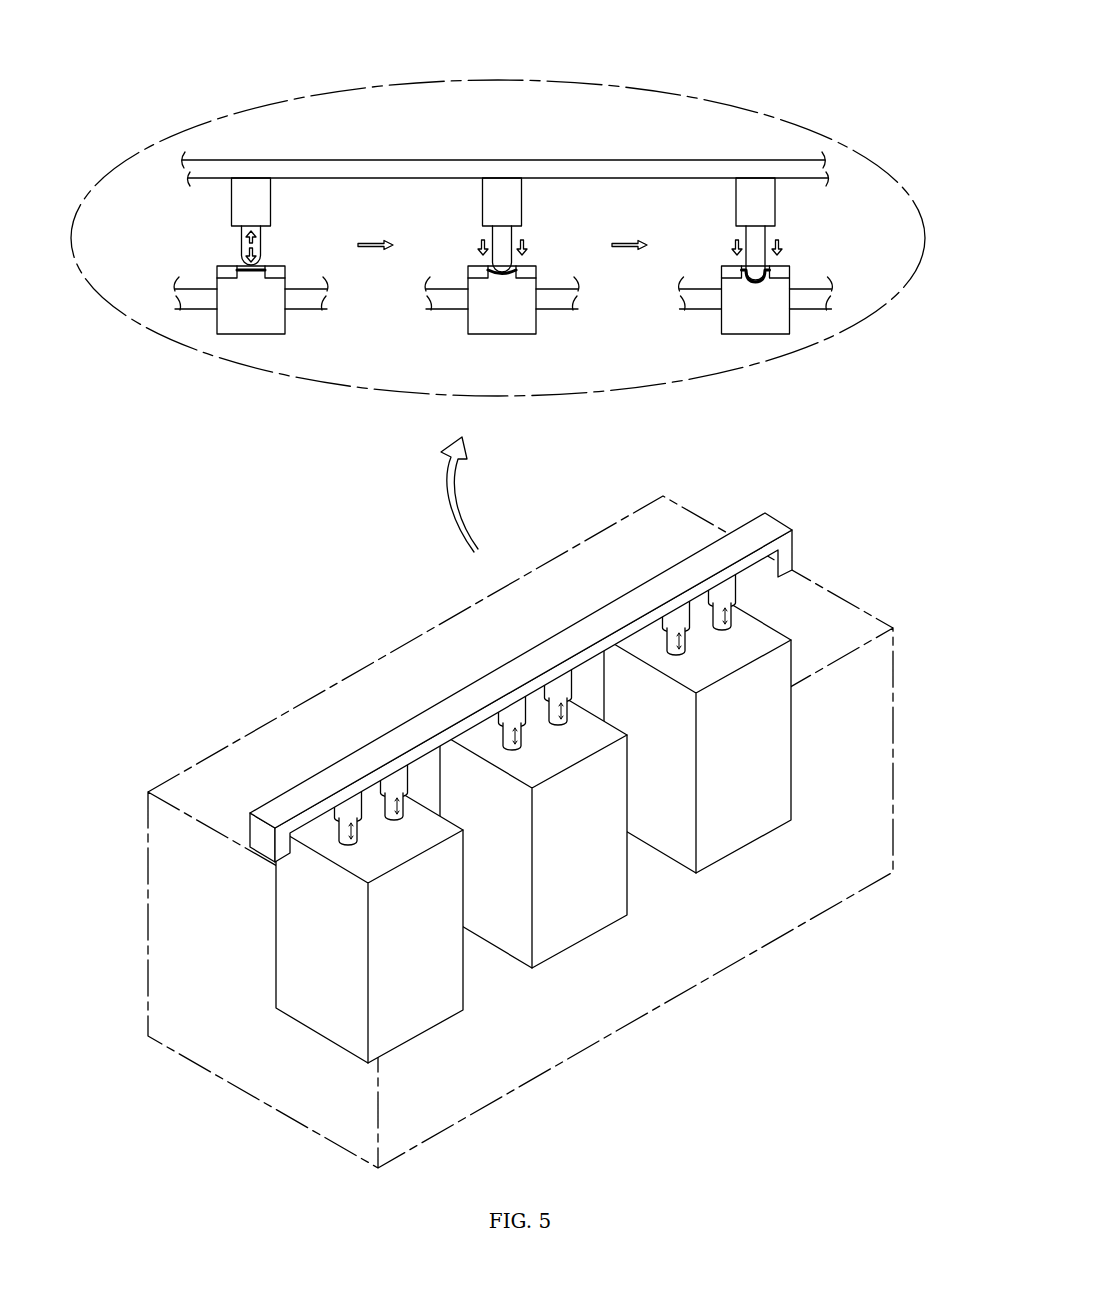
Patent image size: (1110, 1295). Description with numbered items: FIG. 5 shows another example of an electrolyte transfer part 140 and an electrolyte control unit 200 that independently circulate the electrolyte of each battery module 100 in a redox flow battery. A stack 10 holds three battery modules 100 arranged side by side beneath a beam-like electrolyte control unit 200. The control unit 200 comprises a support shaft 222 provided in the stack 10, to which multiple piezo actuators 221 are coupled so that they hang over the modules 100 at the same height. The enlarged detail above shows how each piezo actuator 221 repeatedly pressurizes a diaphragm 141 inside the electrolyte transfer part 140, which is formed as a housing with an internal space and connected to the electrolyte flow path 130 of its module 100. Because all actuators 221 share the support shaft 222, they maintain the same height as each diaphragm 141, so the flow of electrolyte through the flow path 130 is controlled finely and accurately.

The stack 10 is at (259, 716).
The battery module 100 is at (288, 962).
The electrolyte flow path 130 is at (303, 300).
The electrolyte transfer part 140 is at (233, 317).
The diaphragm 141 is at (252, 271).
The electrolyte control unit 200 is at (524, 447).
The piezo actuator 221 is at (257, 196).
The support shaft 222 is at (638, 167).